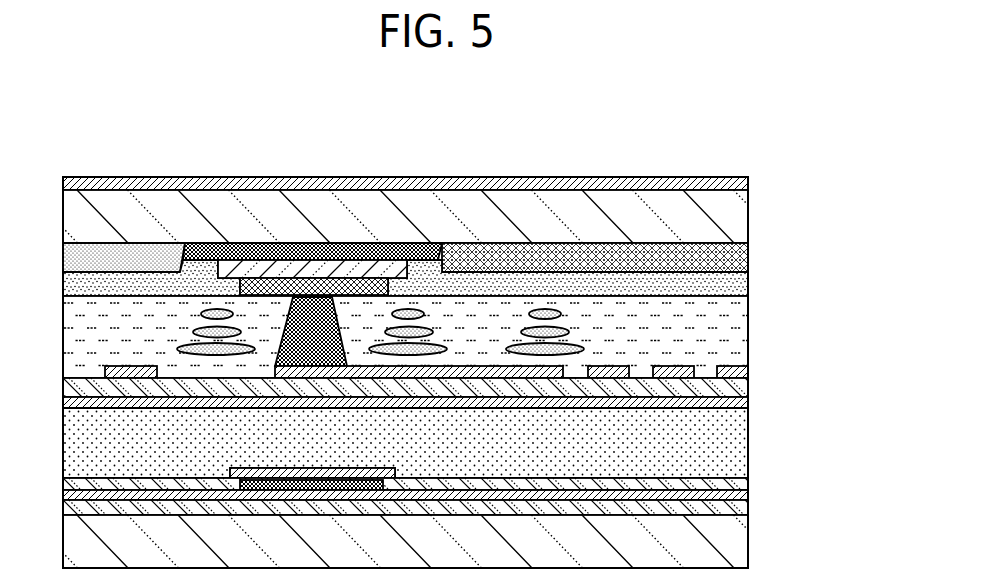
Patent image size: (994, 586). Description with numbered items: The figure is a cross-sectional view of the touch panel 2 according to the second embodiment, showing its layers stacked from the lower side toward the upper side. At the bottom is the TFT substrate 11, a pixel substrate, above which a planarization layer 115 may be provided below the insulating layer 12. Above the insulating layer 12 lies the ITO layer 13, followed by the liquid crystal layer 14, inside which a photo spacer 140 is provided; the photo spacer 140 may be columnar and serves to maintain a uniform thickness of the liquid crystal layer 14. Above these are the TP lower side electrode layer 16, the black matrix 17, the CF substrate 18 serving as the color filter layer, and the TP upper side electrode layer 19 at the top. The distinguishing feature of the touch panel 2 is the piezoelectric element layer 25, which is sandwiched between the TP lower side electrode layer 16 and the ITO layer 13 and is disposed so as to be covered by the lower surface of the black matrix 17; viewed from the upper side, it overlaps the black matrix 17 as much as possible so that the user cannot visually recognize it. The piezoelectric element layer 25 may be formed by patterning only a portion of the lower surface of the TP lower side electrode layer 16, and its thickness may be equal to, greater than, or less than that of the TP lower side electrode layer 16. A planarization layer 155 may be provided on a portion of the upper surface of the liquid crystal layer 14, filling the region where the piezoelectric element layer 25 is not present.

The touch panel 2 is at (667, 109).
The TFT substrate 11 is at (742, 541).
The insulating layer 12 is at (738, 387).
The ITO layer 13 is at (740, 372).
The liquid crystal layer 14 is at (740, 329).
The planarization layer 115 is at (742, 443).
The planarization layer 155 is at (742, 286).
The TP lower side electrode layer 16 is at (368, 268).
The black matrix 17 is at (415, 253).
The CF substrate 18 is at (742, 215).
The TP upper side electrode layer 19 is at (743, 185).
The piezoelectric element layer 25 is at (265, 285).
The photo spacer 140 is at (313, 323).